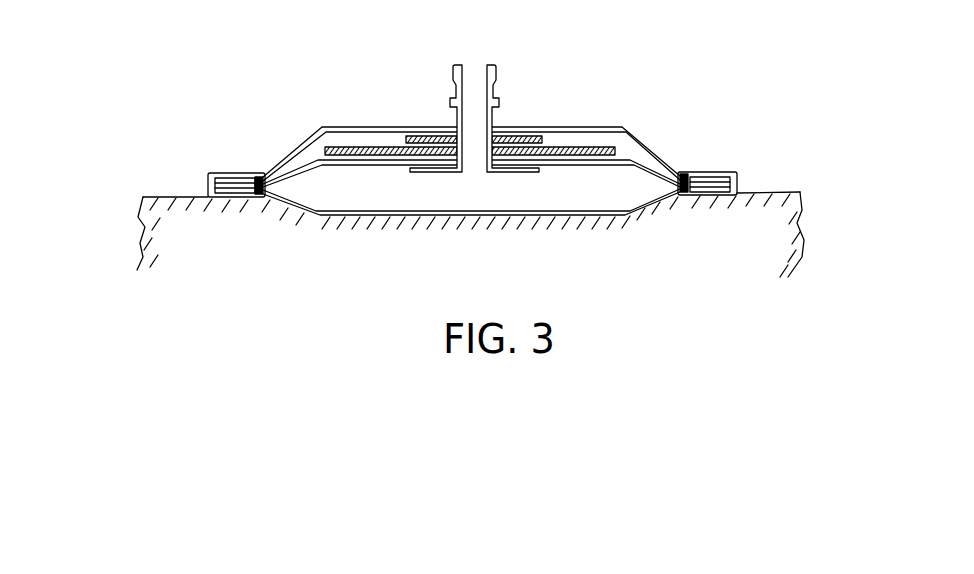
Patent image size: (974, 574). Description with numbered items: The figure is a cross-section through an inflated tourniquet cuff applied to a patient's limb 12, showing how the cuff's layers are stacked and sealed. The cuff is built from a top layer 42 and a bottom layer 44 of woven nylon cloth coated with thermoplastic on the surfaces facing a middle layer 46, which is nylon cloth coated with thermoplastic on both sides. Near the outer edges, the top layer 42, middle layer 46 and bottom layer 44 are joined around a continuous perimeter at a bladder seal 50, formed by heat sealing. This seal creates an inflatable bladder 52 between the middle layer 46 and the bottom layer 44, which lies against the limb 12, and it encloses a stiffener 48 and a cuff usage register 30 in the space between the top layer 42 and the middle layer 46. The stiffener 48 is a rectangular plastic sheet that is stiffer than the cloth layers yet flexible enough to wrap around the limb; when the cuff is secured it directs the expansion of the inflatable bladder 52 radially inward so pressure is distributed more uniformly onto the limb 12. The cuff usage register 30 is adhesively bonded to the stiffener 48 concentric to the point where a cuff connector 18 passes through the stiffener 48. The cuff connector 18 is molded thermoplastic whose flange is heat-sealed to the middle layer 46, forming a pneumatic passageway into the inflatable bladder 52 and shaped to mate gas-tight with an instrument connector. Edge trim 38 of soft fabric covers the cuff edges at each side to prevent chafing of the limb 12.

The limb 12 is at (800, 192).
The cuff connector 18 is at (456, 113).
The cuff usage register 30 is at (542, 138).
The edge trim 38 is at (243, 175).
The top layer 42 is at (327, 128).
The bottom layer 44 is at (565, 215).
The middle layer 46 is at (650, 168).
The stiffener 48 is at (617, 150).
The bladder seal 50 is at (258, 195).
The inflatable bladder 52 is at (497, 200).